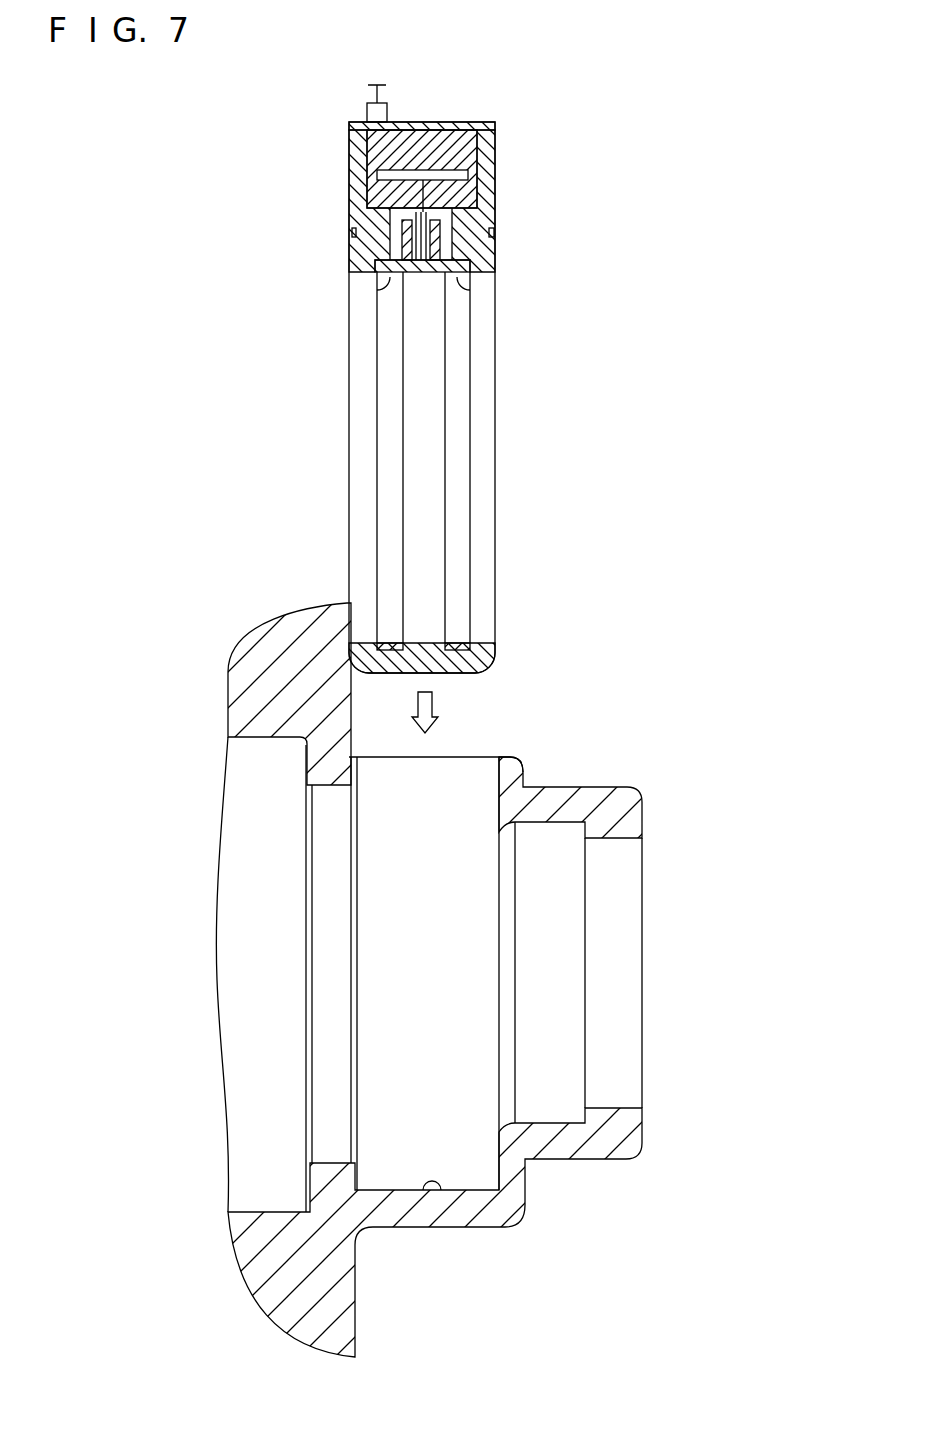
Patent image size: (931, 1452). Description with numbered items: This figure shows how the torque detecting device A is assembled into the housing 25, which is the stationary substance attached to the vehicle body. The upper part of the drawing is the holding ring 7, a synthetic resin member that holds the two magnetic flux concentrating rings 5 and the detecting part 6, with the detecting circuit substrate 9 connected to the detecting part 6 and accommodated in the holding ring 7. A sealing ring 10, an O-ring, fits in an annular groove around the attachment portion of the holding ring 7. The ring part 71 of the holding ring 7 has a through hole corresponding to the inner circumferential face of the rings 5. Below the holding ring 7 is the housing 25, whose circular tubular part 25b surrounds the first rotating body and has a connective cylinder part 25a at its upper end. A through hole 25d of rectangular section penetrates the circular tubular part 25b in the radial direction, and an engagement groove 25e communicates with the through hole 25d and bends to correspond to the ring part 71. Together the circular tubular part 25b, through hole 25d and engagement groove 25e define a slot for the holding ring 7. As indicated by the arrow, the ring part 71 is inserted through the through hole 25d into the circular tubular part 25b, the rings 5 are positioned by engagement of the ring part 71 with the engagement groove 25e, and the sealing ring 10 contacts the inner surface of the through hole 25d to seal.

The torque detecting device A is at (443, 396).
The holding ring 7 is at (478, 410).
The detecting circuit substrate 9 is at (372, 181).
The sealing ring 10 is at (495, 232).
The detecting part 6 is at (400, 240).
The magnetic flux concentrating ring 5 is at (378, 285).
The ring part 71 is at (450, 673).
The housing 25 is at (641, 922).
The connective cylinder part 25a is at (642, 793).
The circular tubular part 25b is at (228, 957).
The through hole 25d is at (483, 757).
The engagement groove 25e is at (432, 1192).